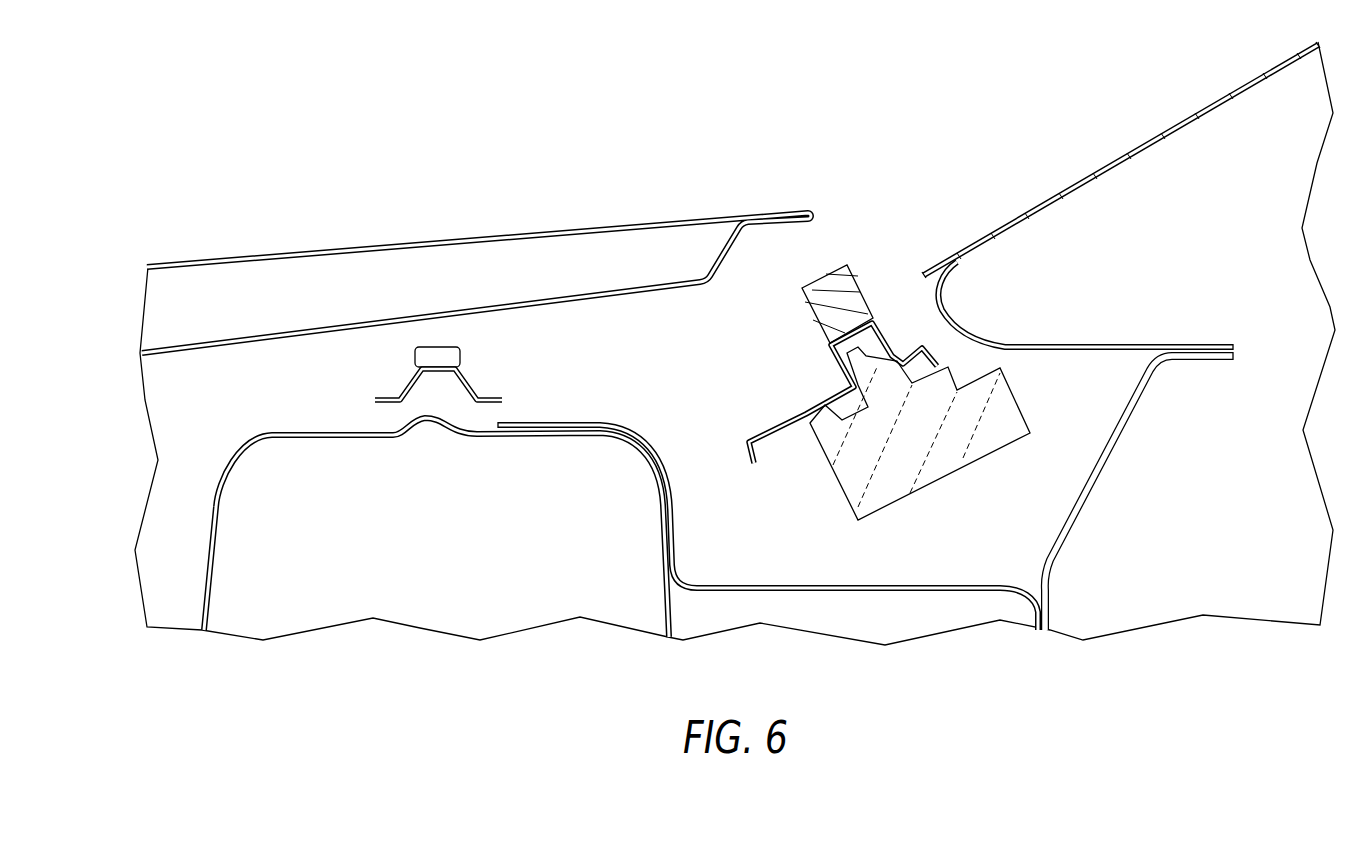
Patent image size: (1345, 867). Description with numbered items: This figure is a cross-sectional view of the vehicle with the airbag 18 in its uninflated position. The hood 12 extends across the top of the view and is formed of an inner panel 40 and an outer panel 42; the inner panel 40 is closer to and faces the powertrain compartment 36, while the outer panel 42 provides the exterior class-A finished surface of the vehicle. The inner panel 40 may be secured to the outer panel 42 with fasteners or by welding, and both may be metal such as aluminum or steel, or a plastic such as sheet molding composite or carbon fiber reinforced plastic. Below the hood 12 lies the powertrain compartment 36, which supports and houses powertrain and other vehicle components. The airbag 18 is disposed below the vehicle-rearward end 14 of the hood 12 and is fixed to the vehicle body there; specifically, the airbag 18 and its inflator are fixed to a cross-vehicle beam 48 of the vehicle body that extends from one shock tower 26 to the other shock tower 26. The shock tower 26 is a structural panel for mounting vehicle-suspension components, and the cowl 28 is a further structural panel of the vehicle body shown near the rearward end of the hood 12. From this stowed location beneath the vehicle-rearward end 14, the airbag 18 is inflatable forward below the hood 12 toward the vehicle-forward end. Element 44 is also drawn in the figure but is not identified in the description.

The hood 12 is at (484, 210).
The vehicle-rearward end 14 is at (609, 163).
The airbag 18 is at (460, 352).
The shock tower 26 is at (343, 438).
The cowl 28 is at (960, 320).
The powertrain compartment 36 is at (284, 352).
The inner panel 40 is at (340, 330).
The outer panel 42 is at (362, 240).
The glass panel 44 is at (1140, 140).
The cross-vehicle beam 48 is at (478, 394).